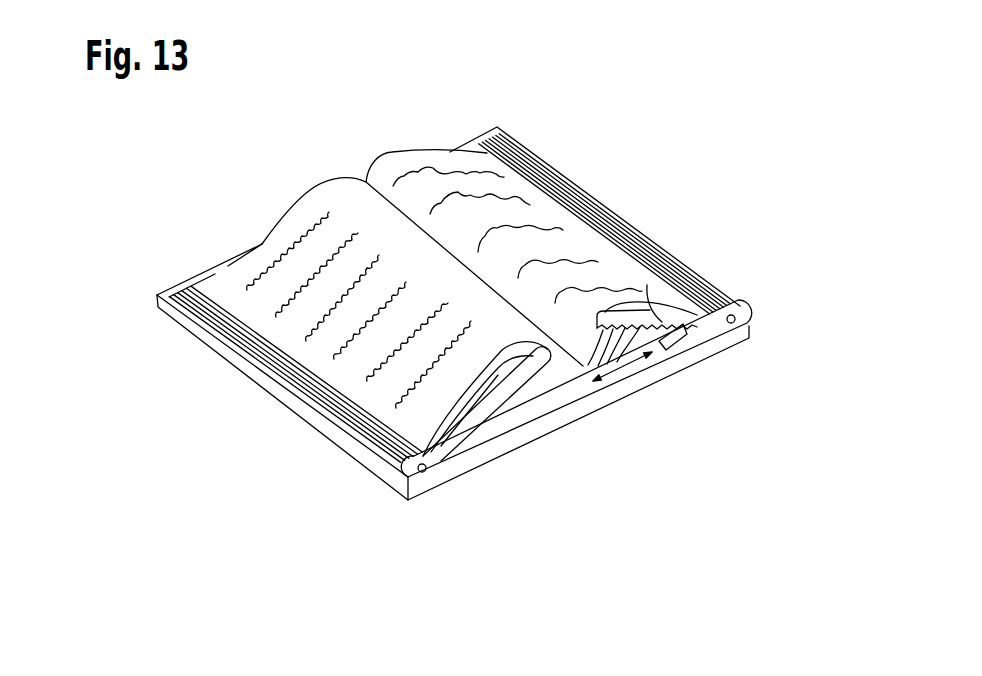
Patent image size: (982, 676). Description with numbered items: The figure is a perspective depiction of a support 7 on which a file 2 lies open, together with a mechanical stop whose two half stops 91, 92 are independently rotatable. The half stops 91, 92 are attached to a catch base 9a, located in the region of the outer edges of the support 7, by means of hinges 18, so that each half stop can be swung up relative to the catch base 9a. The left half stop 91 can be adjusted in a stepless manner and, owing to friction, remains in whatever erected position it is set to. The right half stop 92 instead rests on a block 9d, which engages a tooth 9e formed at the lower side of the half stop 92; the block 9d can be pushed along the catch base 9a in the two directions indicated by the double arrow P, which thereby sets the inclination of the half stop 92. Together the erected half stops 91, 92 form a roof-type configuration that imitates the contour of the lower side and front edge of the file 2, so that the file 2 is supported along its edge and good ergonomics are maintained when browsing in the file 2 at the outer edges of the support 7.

The file 2 is at (393, 160).
The support 7 is at (180, 371).
The catch base 9a is at (515, 532).
The block 9d is at (698, 416).
The tooth 9e is at (690, 227).
The hinges 18 is at (786, 365).
The left half stop 91 is at (577, 500).
The right half stop 92 is at (737, 396).
The double arrow P is at (650, 434).